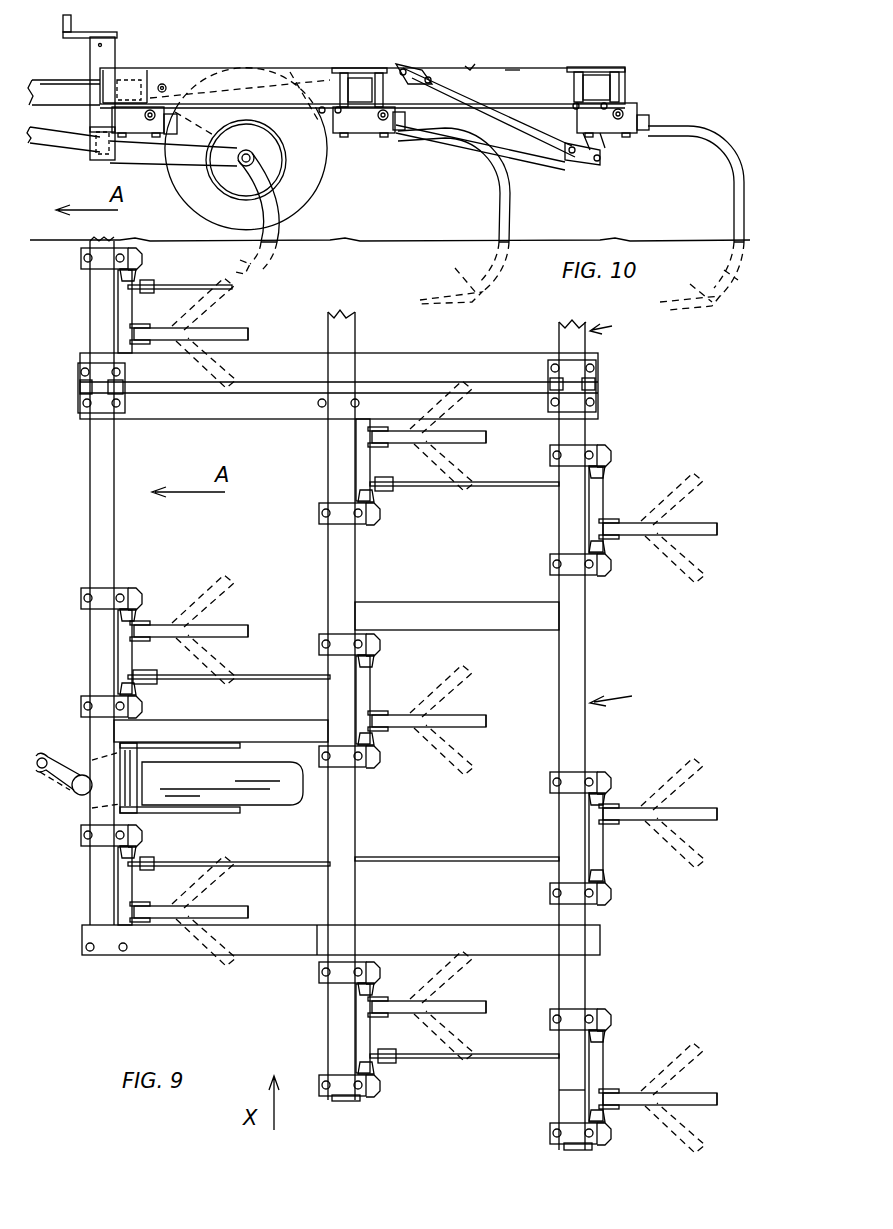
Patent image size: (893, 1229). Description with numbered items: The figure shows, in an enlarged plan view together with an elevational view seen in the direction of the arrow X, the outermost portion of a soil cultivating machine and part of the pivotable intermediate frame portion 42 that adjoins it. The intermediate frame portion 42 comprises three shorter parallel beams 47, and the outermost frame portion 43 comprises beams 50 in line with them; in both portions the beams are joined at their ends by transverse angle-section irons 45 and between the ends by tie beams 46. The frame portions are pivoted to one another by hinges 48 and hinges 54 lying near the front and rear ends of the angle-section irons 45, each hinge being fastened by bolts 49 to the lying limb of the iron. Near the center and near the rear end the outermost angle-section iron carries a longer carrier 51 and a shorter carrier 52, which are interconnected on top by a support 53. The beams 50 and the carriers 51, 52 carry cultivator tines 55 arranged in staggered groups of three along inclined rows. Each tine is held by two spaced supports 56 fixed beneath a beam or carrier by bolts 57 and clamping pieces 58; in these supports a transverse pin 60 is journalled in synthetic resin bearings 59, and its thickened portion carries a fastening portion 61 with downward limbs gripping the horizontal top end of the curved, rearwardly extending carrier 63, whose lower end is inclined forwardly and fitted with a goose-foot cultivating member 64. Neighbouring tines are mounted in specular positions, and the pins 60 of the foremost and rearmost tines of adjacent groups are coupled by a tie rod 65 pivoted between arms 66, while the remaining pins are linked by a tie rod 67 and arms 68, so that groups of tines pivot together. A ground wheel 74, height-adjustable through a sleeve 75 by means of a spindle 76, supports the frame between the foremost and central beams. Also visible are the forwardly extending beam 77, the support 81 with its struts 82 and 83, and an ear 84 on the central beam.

In FIG. 9, the intermediate frame portion 42 is at (614, 323).
In FIG. 9, the outermost frame portion 43 is at (624, 693).
In FIG. 10, the outermost frame portion 43 is at (470, 68).
In FIG. 9, the angle-section iron 45 is at (390, 368).
In FIG. 10, the angle-section iron 45 is at (228, 68).
In FIG. 9, the tie beam 46 is at (262, 724).
In FIG. 9, the beam 47 is at (90, 318).
In FIG. 9, the hinge 48 is at (78, 400).
In FIG. 9, the bolt 49 is at (120, 376).
In FIG. 9, the beam 50 is at (92, 500).
In FIG. 10, the beam 50 is at (132, 70).
In FIG. 9, the carrier 51 is at (332, 1102).
In FIG. 10, the carrier 51 is at (360, 68).
In FIG. 9, the carrier 52 is at (559, 1087).
In FIG. 10, the carrier 52 is at (592, 67).
In FIG. 9, the support 53 is at (462, 926).
In FIG. 10, the support 53 is at (512, 68).
In FIG. 9, the hinge 54 is at (80, 374).
In FIG. 9, the cultivator tine 55 is at (178, 330).
In FIG. 10, the cultivator tine 55 is at (286, 204).
In FIG. 9, the support 56 is at (140, 254).
In FIG. 10, the support 56 is at (142, 134).
In FIG. 9, the bolt 57 is at (82, 258).
In FIG. 10, the bolt 57 is at (340, 68).
In FIG. 9, the clamping piece 58 is at (86, 250).
In FIG. 10, the clamping piece 58 is at (330, 66).
In FIG. 9, the synthetic resin bearing 59 is at (122, 276).
In FIG. 9, the pin 60 is at (120, 320).
In FIG. 10, the fastening portion 61 is at (648, 116).
In FIG. 9, the carrier 63 is at (246, 334).
In FIG. 10, the carrier 63 is at (260, 222).
In FIG. 9, the cultivating member 64 is at (230, 300).
In FIG. 10, the cultivating member 64 is at (460, 274).
In FIG. 9, the tie rod 65 is at (196, 284).
In FIG. 9, the arm 66 is at (150, 282).
In FIG. 10, the arm 66 is at (164, 82).
In FIG. 9, the tie rod 67 is at (272, 680).
In FIG. 10, the tie rod 67 is at (466, 98).
In FIG. 9, the arm 68 is at (152, 676).
In FIG. 10, the arm 68 is at (400, 64).
In FIG. 9, the ground wheel 74 is at (272, 802).
In FIG. 10, the ground wheel 74 is at (180, 198).
In FIG. 10, the sleeve 75 is at (82, 93).
In FIG. 9, the spindle 76 is at (72, 766).
In FIG. 10, the spindle 76 is at (70, 24).
In FIG. 10, the beam 77 is at (62, 82).
In FIG. 10, the support 81 is at (100, 162).
In FIG. 10, the strut 82 is at (278, 70).
In FIG. 10, the strut 83 is at (70, 148).
In FIG. 10, the ear 84 is at (284, 128).